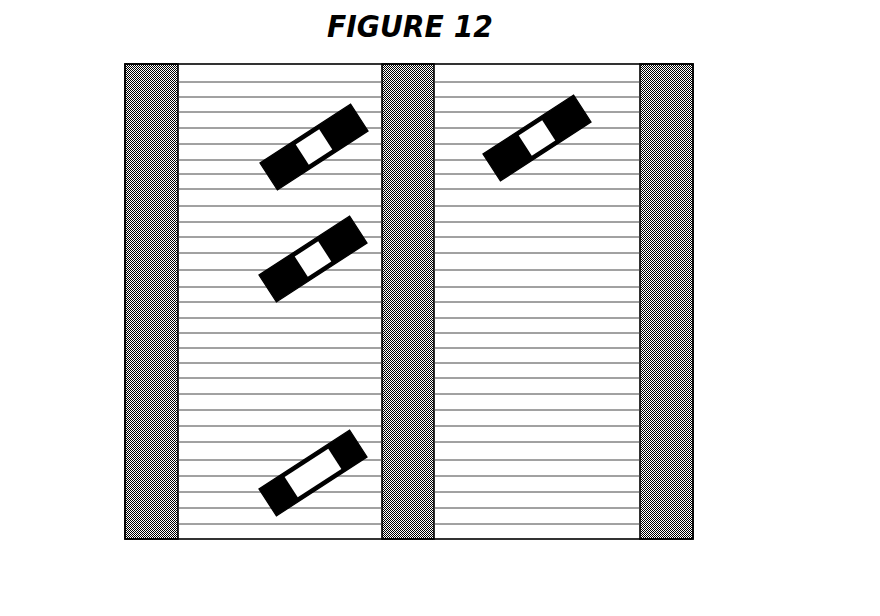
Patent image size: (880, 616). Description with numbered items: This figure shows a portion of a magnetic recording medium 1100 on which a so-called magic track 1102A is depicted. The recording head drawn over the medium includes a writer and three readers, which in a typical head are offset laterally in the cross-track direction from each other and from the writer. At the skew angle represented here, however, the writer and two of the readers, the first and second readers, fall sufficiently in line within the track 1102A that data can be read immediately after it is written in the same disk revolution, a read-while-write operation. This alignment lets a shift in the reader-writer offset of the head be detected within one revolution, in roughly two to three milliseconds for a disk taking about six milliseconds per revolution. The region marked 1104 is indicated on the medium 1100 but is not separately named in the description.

The magnetic recording medium 1100 is at (413, 328).
The magic track 1102A is at (273, 541).
The contact column 1104 is at (198, 134).